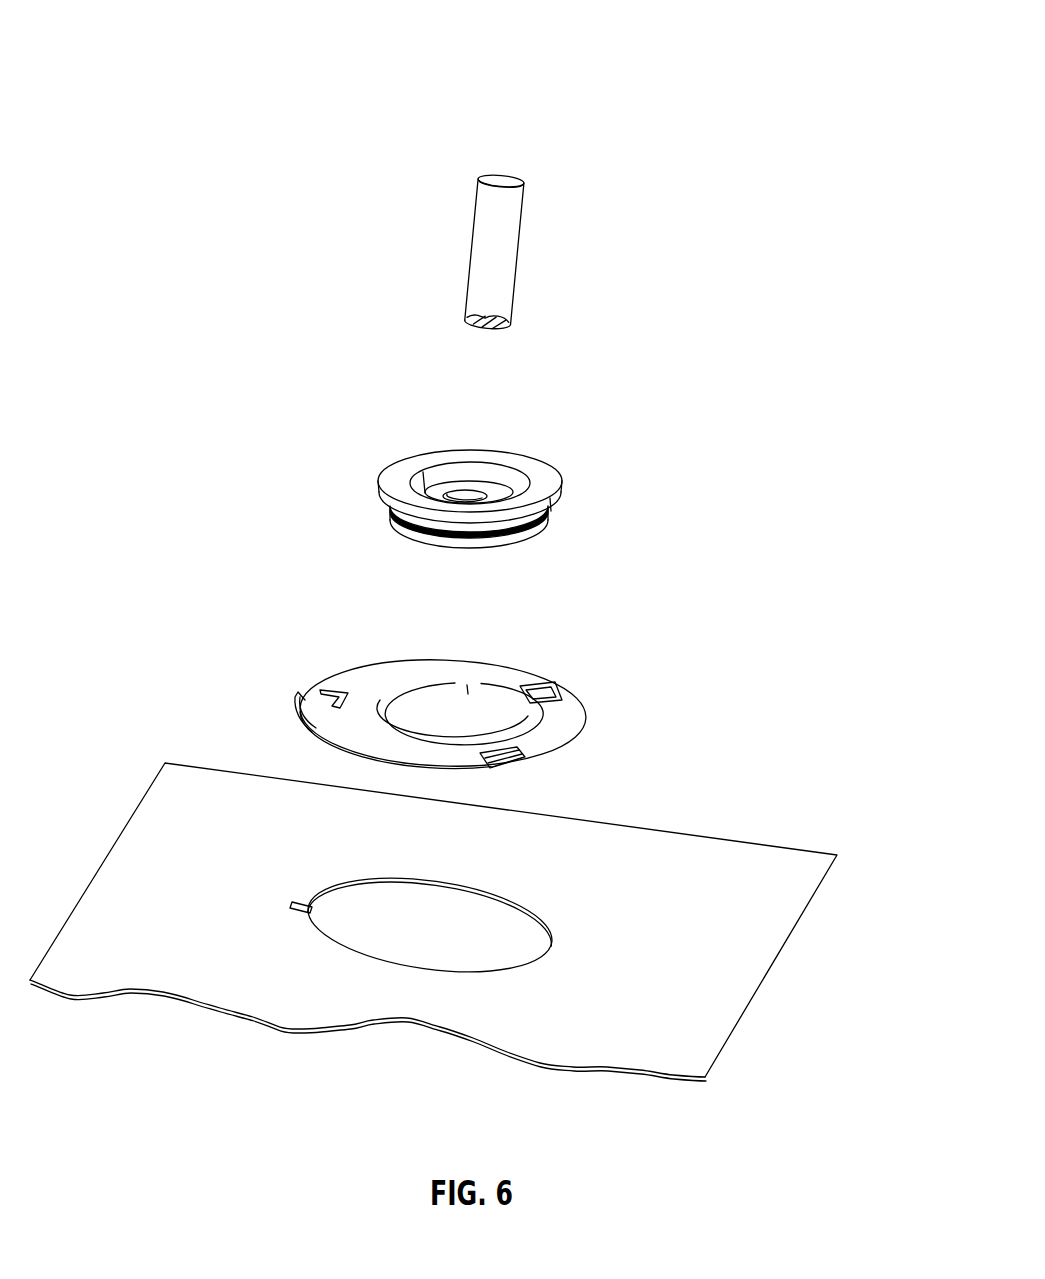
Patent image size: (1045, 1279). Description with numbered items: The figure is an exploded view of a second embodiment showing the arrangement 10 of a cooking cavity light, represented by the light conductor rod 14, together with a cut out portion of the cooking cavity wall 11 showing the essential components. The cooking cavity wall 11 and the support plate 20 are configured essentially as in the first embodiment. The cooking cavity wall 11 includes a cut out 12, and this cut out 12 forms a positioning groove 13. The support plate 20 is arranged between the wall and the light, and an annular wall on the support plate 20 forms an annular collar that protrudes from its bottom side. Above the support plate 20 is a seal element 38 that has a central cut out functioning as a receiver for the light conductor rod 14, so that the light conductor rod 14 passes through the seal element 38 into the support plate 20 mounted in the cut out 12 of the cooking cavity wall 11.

The arrangement 10 is at (690, 177).
The light conductor rod 14 is at (443, 245).
The seal element 38 is at (506, 440).
The support plate 20 is at (610, 702).
The cooking cavity wall 11 is at (475, 880).
The cut out 12 is at (478, 935).
The positioning groove 13 is at (318, 913).